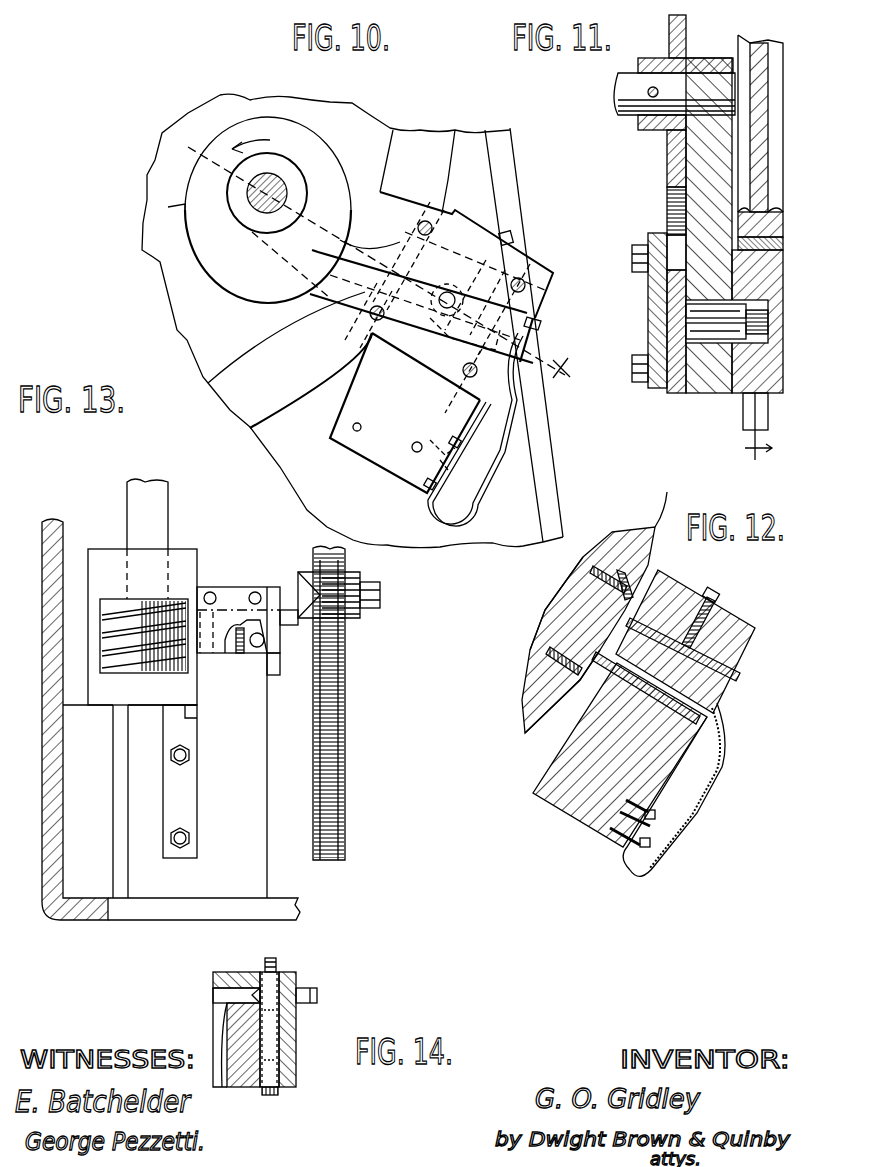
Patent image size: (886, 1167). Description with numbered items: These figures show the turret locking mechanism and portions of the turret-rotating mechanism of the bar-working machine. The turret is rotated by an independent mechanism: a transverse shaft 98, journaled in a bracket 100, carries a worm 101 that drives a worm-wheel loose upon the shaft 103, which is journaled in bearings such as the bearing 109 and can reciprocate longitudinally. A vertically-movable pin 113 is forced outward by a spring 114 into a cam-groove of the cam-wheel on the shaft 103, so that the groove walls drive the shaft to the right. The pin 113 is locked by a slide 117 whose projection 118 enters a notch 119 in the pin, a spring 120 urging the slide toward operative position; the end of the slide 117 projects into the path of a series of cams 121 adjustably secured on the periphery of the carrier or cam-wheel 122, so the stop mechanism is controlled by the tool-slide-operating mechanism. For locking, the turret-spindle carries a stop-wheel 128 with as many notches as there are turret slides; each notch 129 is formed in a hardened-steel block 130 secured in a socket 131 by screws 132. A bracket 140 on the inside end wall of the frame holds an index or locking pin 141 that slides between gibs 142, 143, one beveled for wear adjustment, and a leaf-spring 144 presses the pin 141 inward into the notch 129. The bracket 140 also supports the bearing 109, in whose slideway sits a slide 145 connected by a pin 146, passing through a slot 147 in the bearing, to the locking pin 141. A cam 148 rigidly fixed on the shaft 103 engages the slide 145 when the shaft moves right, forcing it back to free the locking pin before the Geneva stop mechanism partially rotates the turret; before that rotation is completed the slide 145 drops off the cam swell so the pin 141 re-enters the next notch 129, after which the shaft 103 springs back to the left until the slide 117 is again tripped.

In FIG. 13, the transverse shaft 98 is at (150, 527).
In FIG. 13, the bracket 100 is at (175, 688).
In FIG. 13, the worm 101 is at (200, 590).
In FIG. 10, the shaft 103 is at (263, 196).
In FIG. 11, the shaft 103 is at (622, 92).
In FIG. 10, the bearing 109 is at (457, 335).
In FIG. 11, the bearing 109 is at (708, 378).
In FIG. 13, the vertically-movable pin 113 is at (262, 660).
In FIG. 14, the vertically-movable pin 113 is at (272, 1026).
In FIG. 14, the spring 114 is at (262, 1092).
In FIG. 13, the slide 117 is at (288, 606).
In FIG. 14, the slide 117 is at (312, 990).
In FIG. 14, the projection 118 is at (262, 985).
In FIG. 14, the notch 119 is at (280, 975).
In FIG. 14, the spring 120 is at (213, 1015).
In FIG. 13, the cams 121 is at (340, 618).
In FIG. 13, the carrier or cam-wheel 122 is at (347, 752).
In FIG. 10, the stop-wheel 128 is at (260, 392).
In FIG. 12, the stop-wheel 128 is at (575, 570).
In FIG. 12, the notch 129 is at (583, 620).
In FIG. 12, the hardened-steel block 130 is at (666, 505).
In FIG. 12, the socket 131 is at (622, 565).
In FIG. 12, the screws 132 is at (592, 565).
In FIG. 12, the bracket 140 is at (598, 820).
In FIG. 11, the index or locking pin 141 is at (770, 290).
In FIG. 12, the index or locking pin 141 is at (722, 688).
In FIG. 12, the gib 142 is at (725, 725).
In FIG. 12, the gib 143 is at (740, 665).
In FIG. 10, the leaf-spring 144 is at (478, 488).
In FIG. 11, the leaf-spring 144 is at (745, 418).
In FIG. 12, the leaf-spring 144 is at (700, 810).
In FIG. 10, the slide 145 is at (440, 252).
In FIG. 10, the pin 146 is at (385, 323).
In FIG. 11, the pin 146 is at (655, 312).
In FIG. 12, the pin 146 is at (600, 660).
In FIG. 10, the slot 147 is at (406, 413).
In FIG. 11, the slot 147 is at (690, 333).
In FIG. 10, the cam 148 is at (305, 138).
In FIG. 11, the cam 148 is at (668, 160).